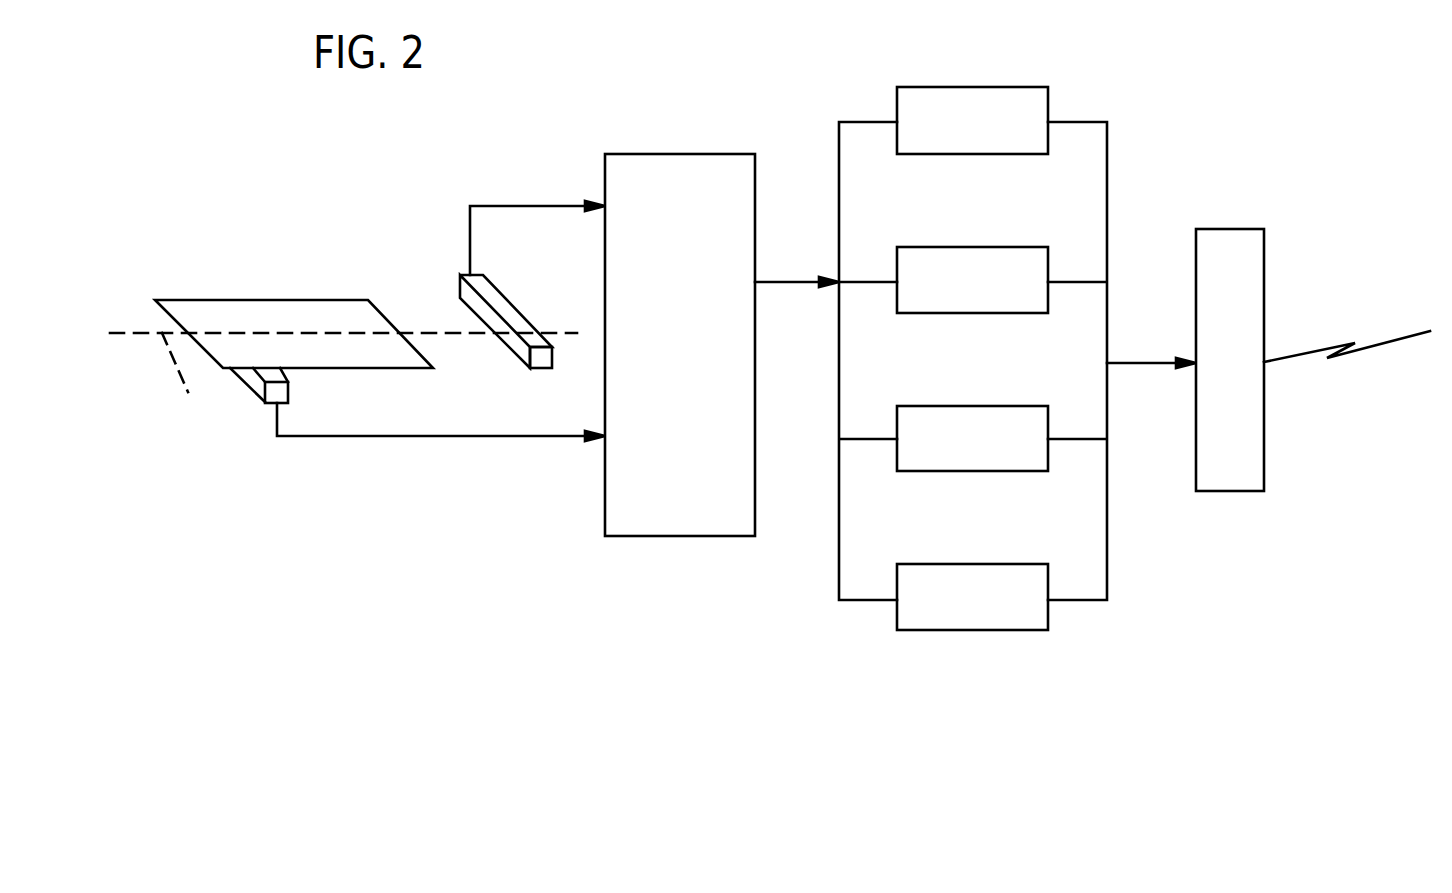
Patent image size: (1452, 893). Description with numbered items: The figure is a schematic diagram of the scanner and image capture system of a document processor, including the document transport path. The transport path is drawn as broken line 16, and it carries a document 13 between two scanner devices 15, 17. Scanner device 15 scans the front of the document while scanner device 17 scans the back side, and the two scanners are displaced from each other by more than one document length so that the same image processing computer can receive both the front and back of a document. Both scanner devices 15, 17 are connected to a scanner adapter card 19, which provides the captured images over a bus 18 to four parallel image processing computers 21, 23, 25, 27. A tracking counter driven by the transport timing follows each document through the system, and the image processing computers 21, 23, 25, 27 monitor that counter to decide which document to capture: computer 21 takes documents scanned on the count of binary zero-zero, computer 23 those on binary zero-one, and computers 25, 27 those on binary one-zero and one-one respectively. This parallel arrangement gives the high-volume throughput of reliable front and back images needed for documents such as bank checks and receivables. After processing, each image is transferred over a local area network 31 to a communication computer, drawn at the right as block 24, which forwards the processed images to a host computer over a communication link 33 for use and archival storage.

The document 13 is at (303, 300).
The scanner device 15 is at (460, 285).
The document transport path 16 is at (343, 380).
The scanner device 17 is at (288, 392).
The bus 18 is at (838, 567).
The scanner adapter card 19 is at (714, 152).
The image processing computer 21 is at (1018, 87).
The image processing computer 23 is at (1018, 247).
The image processing computer 25 is at (1018, 404).
The image processing computer 27 is at (1018, 563).
The transmitter 24 is at (1229, 231).
The local area network 31 is at (1135, 362).
The communication link 33 is at (1385, 345).